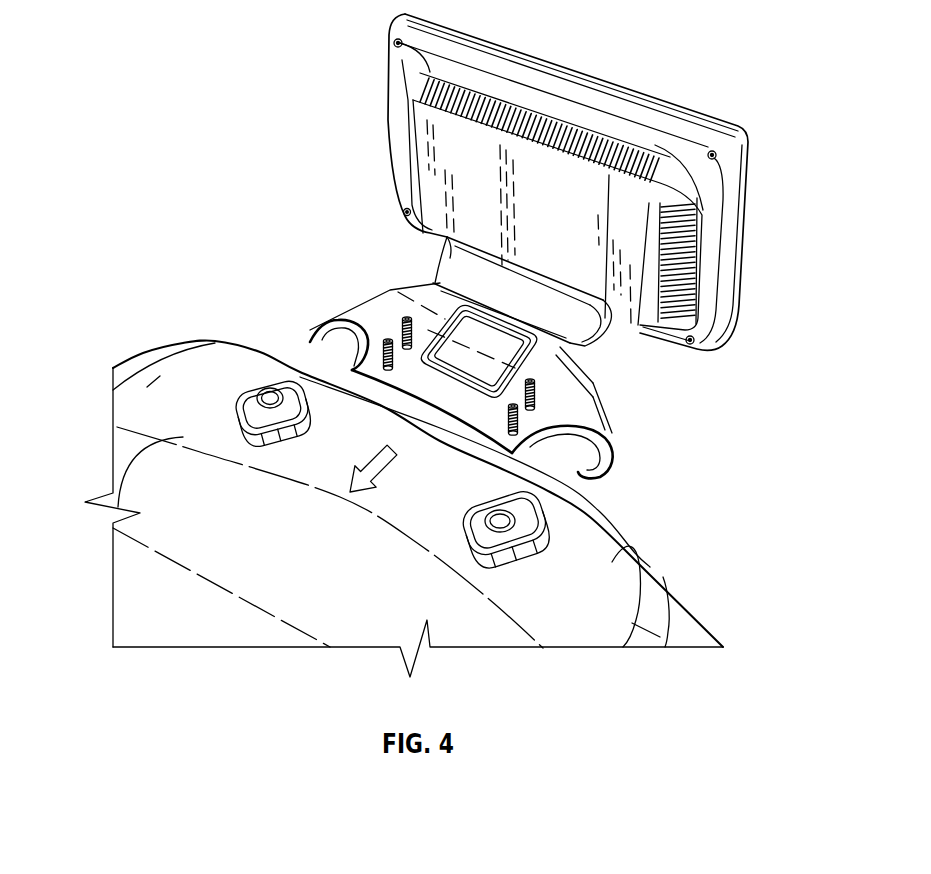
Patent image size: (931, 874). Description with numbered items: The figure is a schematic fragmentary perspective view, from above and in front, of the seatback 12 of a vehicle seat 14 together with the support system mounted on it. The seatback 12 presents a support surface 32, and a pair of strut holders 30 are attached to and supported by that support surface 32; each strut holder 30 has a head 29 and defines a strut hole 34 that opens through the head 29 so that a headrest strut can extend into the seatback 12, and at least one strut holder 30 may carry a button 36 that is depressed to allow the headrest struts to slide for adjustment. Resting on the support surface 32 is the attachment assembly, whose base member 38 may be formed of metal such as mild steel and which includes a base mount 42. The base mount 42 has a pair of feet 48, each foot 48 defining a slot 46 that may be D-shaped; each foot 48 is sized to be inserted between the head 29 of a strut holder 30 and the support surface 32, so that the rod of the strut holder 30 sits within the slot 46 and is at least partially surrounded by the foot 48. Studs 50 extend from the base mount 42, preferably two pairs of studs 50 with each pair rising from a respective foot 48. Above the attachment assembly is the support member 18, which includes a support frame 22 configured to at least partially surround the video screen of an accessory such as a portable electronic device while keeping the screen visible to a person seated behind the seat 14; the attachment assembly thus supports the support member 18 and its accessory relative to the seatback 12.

The seatback 12 is at (625, 555).
The seat 14 is at (118, 374).
The support member 18 is at (578, 93).
The support frame 22 is at (735, 215).
The head 29 is at (258, 425).
The strut holder 30 is at (278, 383).
The support surface 32 is at (195, 372).
The strut hole 34 is at (266, 390).
The button 36 is at (525, 548).
The base member 38 is at (590, 408).
The base mount 42 is at (457, 395).
The slot 46 is at (337, 356).
The foot 48 is at (362, 368).
The stud 50 is at (387, 343).